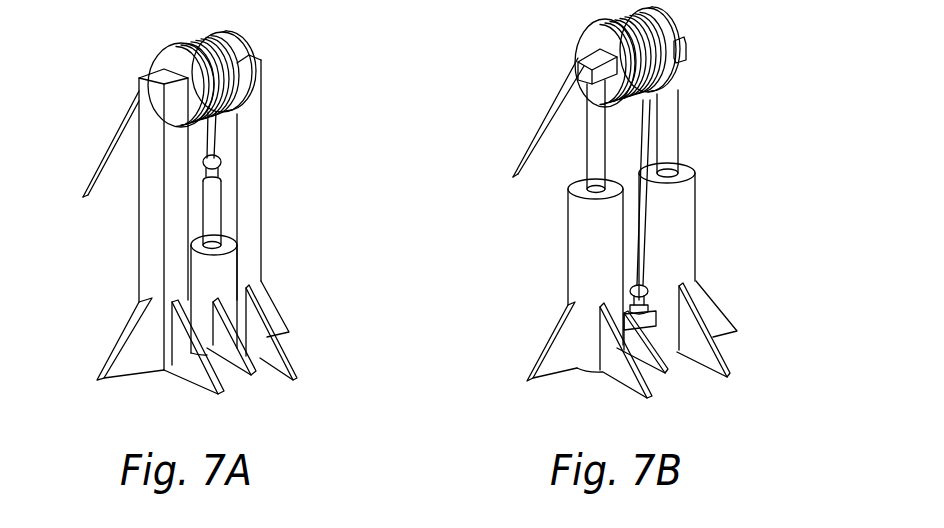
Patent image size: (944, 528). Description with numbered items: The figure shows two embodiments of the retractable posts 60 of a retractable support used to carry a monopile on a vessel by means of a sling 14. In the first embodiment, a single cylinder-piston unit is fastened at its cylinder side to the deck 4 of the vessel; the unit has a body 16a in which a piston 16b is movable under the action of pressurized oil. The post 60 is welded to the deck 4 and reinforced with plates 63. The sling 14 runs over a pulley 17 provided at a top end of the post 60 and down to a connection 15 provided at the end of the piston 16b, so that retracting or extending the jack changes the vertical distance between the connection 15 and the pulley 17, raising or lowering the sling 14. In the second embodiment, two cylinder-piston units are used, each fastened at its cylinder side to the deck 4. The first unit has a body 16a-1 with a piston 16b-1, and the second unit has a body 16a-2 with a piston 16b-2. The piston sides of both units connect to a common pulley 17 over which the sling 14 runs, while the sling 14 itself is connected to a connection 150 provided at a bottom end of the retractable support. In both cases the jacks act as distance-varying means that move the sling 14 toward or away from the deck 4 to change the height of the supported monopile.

In FIG. 7A, the deck 4 is at (168, 346).
In FIG. 7B, the deck 4 is at (595, 410).
In FIG. 7A, the sling 14 is at (113, 147).
In FIG. 7B, the sling 14 is at (540, 123).
In FIG. 7A, the connection 15 is at (217, 166).
In FIG. 7A, the body 16a is at (218, 270).
In FIG. 7A, the piston 16b is at (215, 217).
In FIG. 7B, the body of first cylinder-piston unit 16a-1 is at (592, 252).
In FIG. 7B, the piston of first cylinder-piston unit 16b-1 is at (597, 147).
In FIG. 7B, the body of second cylinder-piston unit 16a-2 is at (678, 217).
In FIG. 7B, the piston of second cylinder-piston unit 16b-2 is at (673, 127).
In FIG. 7A, the pulley 17 is at (164, 61).
In FIG. 7B, the pulley 17 is at (593, 38).
In FIG. 7A, the post 60 is at (250, 123).
In FIG. 7A, the plate 63 is at (130, 333).
In FIG. 7B, the connection 150 is at (647, 298).